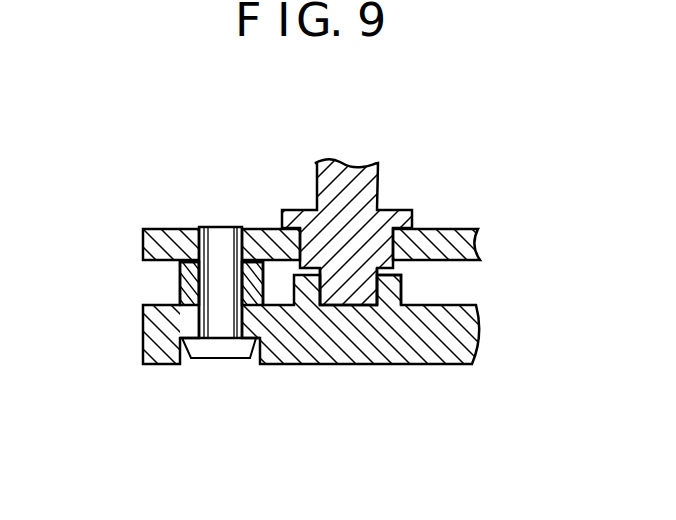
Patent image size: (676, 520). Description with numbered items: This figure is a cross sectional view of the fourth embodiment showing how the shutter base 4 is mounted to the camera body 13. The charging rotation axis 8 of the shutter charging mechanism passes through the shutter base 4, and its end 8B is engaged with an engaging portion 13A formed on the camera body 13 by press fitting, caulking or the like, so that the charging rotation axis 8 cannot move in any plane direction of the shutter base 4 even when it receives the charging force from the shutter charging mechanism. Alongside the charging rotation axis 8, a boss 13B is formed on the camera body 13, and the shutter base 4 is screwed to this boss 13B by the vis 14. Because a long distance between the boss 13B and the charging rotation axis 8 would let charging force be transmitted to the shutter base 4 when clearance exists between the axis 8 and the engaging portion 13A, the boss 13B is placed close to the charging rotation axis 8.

The shutter base 4 is at (460, 237).
The charging rotation axis 8 is at (365, 167).
The end of the charging rotation axis 8B is at (349, 297).
The camera body 13 is at (437, 352).
The engaging portion 13A is at (397, 288).
The boss 13B is at (185, 290).
The vis 14 is at (225, 352).